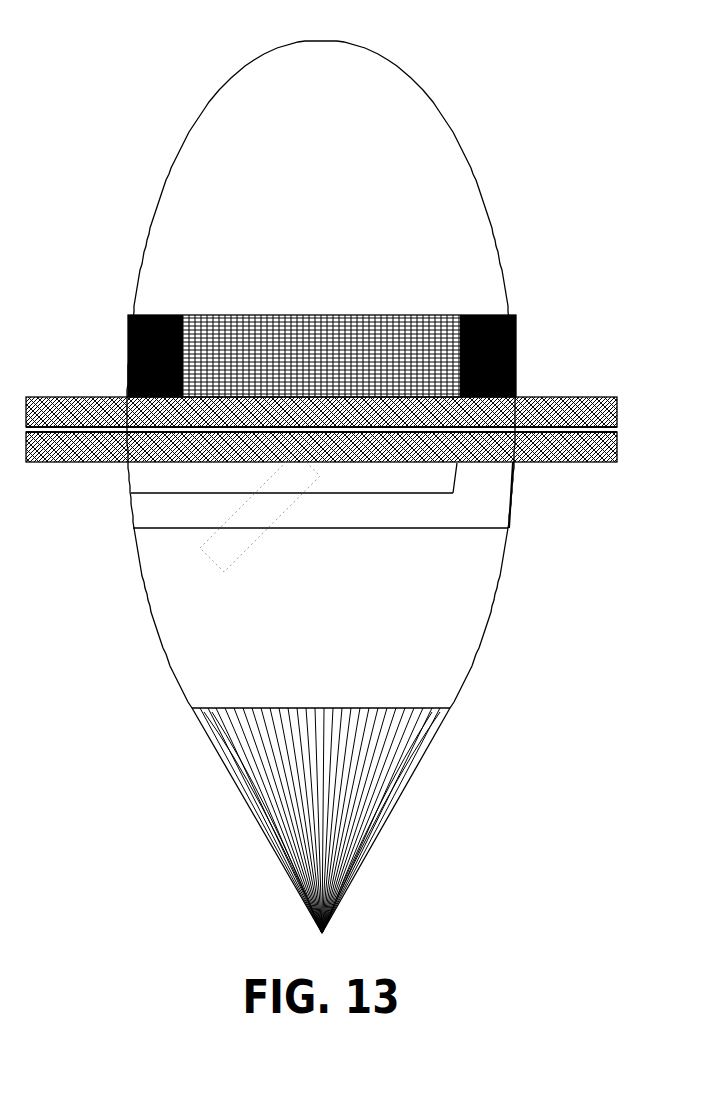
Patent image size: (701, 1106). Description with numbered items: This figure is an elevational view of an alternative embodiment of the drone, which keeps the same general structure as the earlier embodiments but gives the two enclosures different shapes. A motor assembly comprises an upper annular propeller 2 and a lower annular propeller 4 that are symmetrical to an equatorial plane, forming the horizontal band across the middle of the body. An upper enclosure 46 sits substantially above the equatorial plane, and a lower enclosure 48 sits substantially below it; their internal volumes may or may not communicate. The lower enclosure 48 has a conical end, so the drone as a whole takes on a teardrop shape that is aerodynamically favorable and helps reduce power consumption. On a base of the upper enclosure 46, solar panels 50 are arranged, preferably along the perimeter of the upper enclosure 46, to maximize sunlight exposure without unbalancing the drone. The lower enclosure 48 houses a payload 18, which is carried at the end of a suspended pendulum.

The upper enclosure 46 is at (378, 110).
The lower enclosure 48 is at (453, 655).
The solar panels 50 is at (513, 332).
The upper annular propeller 2 is at (580, 417).
The lower annular propeller 4 is at (580, 457).
The payload 18 is at (268, 505).